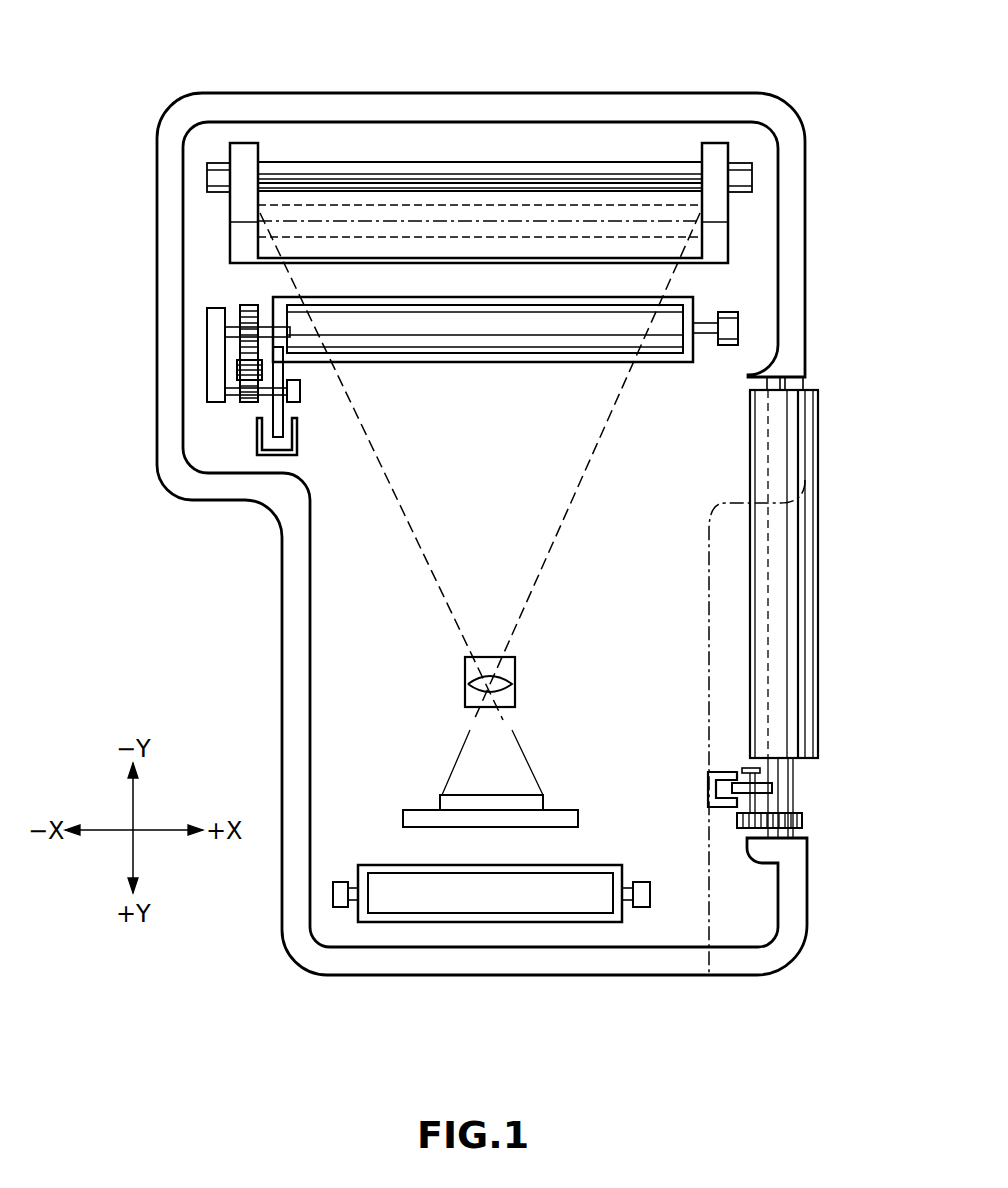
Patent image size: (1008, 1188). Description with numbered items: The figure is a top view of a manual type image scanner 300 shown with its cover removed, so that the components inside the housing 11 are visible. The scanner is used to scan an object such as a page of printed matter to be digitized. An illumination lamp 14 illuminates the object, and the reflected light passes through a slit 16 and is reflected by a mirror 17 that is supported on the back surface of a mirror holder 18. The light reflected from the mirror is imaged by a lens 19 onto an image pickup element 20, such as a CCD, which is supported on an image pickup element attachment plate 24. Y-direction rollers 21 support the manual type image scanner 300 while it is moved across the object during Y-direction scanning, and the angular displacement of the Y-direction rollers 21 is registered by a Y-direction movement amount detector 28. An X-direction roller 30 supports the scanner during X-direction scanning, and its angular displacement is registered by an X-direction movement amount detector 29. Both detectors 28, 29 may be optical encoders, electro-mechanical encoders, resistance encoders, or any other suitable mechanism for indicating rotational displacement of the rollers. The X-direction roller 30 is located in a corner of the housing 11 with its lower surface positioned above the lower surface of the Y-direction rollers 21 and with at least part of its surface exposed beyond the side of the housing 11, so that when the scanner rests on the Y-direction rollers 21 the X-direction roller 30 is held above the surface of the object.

The manual type image scanner 300 is at (467, 84).
The housing 11 is at (797, 318).
The illumination lamp 14 is at (658, 175).
The slit 16 is at (340, 215).
The mirror 17 is at (295, 243).
The mirror holder 18 is at (240, 155).
The lens 19 is at (465, 670).
The image pickup element 20 is at (468, 795).
The Y-direction rollers 21 is at (665, 322).
The image pickup element attachment plate 24 is at (437, 820).
The Y-direction movement amount detector 28 is at (233, 417).
The X-direction movement amount detector 29 is at (722, 810).
The X-direction roller 30 is at (790, 462).